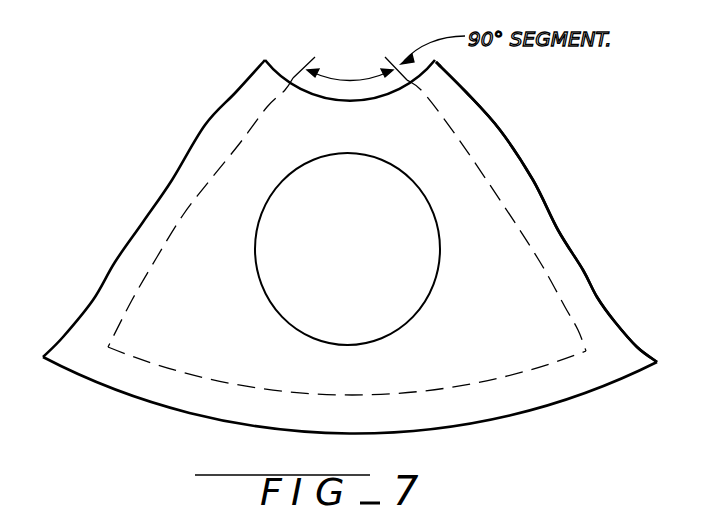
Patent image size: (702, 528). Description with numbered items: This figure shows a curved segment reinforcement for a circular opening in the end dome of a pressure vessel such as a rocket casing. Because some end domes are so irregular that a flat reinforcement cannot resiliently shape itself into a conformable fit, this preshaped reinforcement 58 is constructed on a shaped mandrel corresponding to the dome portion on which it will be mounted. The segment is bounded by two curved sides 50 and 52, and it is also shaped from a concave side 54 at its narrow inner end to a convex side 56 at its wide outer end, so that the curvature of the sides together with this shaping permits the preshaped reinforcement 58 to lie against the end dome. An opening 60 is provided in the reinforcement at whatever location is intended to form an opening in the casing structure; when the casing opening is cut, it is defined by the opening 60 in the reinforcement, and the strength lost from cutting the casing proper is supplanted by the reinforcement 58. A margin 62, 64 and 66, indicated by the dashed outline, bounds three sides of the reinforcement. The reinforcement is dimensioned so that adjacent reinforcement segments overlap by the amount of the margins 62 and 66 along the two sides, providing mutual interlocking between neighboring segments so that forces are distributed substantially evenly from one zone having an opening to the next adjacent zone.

The side 50 is at (533, 180).
The side 52 is at (207, 123).
The concave side 54 is at (278, 71).
The convex side 56 is at (187, 413).
The preshaped reinforcement 58 is at (442, 129).
The opening 60 is at (436, 278).
The margin 62 is at (170, 187).
The margin 64 is at (514, 418).
The margin 66 is at (577, 270).